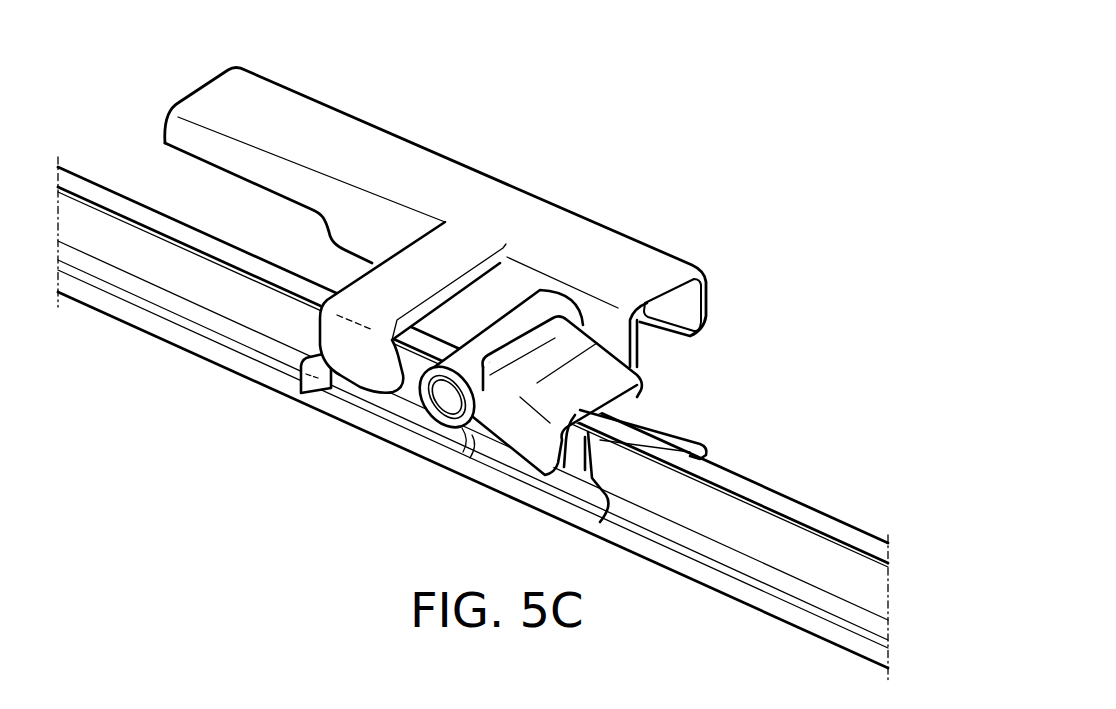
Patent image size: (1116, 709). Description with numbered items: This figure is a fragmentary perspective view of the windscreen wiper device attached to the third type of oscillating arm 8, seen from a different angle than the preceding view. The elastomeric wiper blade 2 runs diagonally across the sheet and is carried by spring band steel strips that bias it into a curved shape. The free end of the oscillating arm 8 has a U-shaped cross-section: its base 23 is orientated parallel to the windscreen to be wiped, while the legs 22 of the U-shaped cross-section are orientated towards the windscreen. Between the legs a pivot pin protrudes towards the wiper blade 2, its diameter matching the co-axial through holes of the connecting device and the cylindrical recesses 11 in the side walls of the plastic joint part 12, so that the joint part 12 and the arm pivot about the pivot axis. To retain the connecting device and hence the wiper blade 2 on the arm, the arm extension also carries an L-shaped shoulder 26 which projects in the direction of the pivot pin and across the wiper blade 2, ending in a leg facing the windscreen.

The wiper blade 2 is at (767, 602).
The oscillating arm 8 is at (480, 187).
The recesses 11 is at (435, 402).
The joint part 12 is at (635, 367).
The legs 22 is at (707, 302).
The base 23 is at (271, 115).
The L-shaped shoulder 26 is at (355, 357).